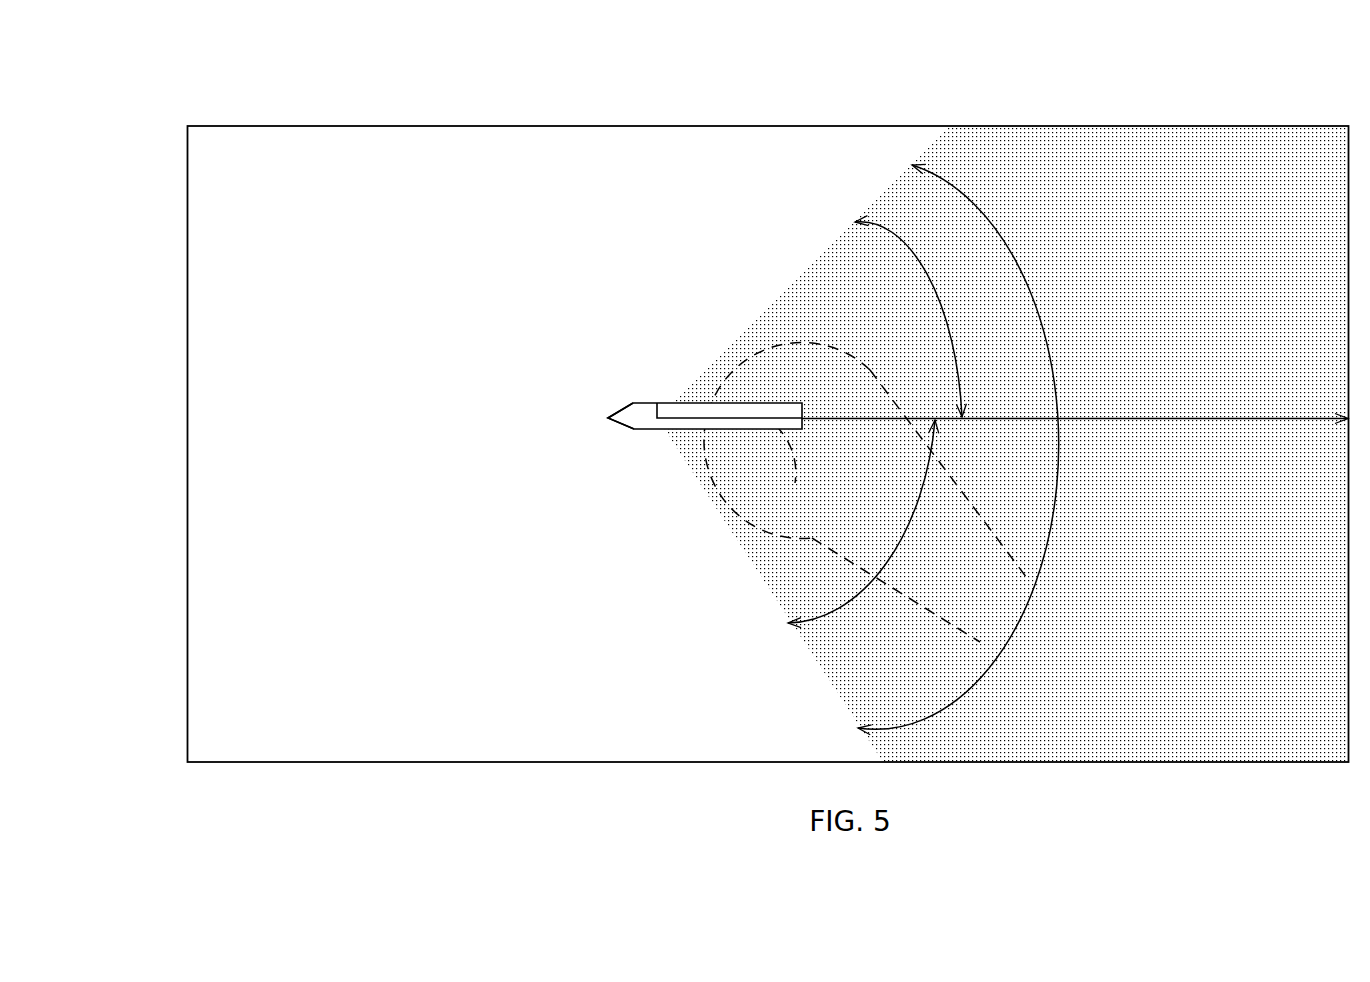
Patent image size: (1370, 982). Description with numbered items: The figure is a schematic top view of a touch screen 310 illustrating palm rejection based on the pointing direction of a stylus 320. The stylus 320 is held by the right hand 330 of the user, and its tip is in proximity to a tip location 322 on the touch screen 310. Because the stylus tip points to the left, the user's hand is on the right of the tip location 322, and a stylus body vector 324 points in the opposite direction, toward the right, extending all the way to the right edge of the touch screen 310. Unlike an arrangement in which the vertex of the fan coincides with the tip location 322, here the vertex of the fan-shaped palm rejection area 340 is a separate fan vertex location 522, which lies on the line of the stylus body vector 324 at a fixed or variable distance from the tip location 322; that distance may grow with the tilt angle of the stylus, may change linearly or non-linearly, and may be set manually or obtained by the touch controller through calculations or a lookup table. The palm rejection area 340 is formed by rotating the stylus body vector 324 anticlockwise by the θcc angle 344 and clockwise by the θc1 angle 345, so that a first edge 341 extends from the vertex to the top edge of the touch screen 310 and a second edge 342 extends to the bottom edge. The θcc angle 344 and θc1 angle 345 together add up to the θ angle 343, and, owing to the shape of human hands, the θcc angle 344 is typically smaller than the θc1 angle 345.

The touch screen 310 is at (326, 126).
The stylus 320 is at (773, 403).
The tip location 322 is at (608, 420).
The stylus body vector 324 is at (878, 418).
The right hand 330 is at (787, 540).
The palm rejection area 340 is at (1210, 280).
The first edge 341 is at (843, 232).
The second edge 342 is at (832, 687).
The θ angle 343 is at (965, 183).
The θcc angle 344 is at (885, 225).
The θc1 angle 345 is at (835, 620).
The fan vertex location 522 is at (657, 404).